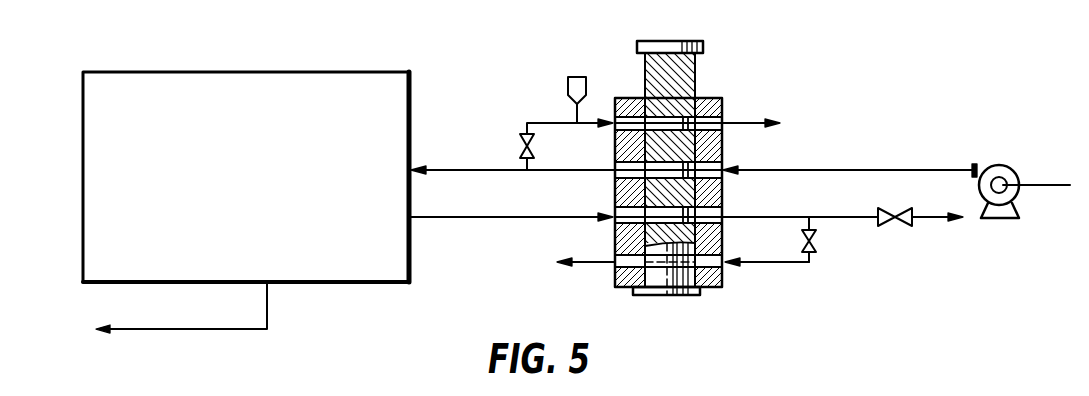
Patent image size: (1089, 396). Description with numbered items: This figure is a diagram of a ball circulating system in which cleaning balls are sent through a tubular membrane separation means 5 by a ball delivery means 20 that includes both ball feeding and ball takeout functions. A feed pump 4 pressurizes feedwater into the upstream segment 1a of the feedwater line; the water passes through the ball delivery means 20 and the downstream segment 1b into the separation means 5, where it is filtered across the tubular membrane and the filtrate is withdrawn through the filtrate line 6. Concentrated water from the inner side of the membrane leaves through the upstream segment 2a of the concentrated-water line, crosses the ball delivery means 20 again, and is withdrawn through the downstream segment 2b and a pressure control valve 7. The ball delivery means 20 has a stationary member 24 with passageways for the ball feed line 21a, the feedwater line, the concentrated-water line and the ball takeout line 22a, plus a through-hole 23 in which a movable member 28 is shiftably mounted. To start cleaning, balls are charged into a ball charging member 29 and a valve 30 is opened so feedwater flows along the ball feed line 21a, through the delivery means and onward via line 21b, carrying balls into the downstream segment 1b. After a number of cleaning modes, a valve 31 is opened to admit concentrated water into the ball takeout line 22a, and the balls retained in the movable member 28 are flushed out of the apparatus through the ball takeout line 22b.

The feed pump 4 is at (1020, 172).
The tubular membrane separation means 5 is at (288, 74).
The filtrate line 6 is at (189, 330).
The pressure control valve 7 is at (886, 228).
The ball delivery means 20 is at (689, 153).
The through-hole 23 is at (722, 241).
The stationary member 24 is at (712, 148).
The movable member 28 is at (668, 41).
The ball charging member 29 is at (573, 75).
The valve 30 is at (520, 143).
The valve 31 is at (816, 240).
The upstream segment of the feedwater line 1a is at (848, 169).
The downstream segment of the feedwater line 1b is at (455, 162).
The upstream segment of the concentrated-water line 2a is at (452, 213).
The downstream segment of the concentrated-water line 2b is at (847, 214).
The ball feed line 21a is at (541, 118).
The ball feed line outlet 21b is at (757, 120).
The ball takeout line 22a is at (775, 265).
The ball takeout line 22b is at (595, 257).